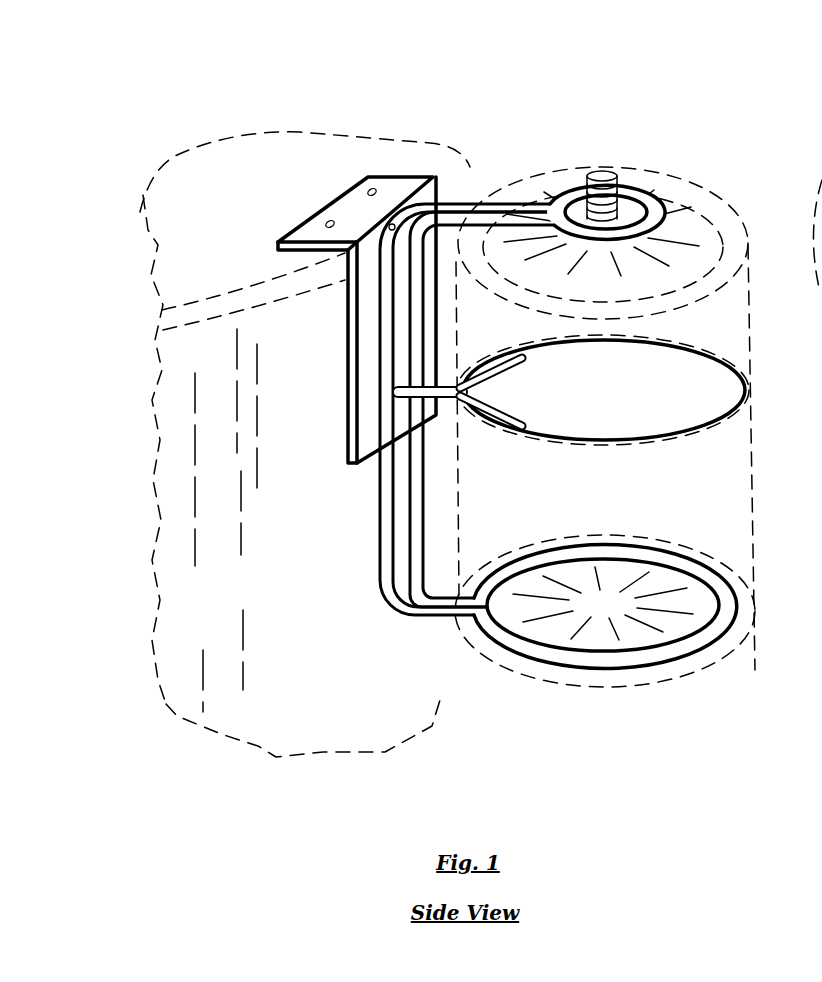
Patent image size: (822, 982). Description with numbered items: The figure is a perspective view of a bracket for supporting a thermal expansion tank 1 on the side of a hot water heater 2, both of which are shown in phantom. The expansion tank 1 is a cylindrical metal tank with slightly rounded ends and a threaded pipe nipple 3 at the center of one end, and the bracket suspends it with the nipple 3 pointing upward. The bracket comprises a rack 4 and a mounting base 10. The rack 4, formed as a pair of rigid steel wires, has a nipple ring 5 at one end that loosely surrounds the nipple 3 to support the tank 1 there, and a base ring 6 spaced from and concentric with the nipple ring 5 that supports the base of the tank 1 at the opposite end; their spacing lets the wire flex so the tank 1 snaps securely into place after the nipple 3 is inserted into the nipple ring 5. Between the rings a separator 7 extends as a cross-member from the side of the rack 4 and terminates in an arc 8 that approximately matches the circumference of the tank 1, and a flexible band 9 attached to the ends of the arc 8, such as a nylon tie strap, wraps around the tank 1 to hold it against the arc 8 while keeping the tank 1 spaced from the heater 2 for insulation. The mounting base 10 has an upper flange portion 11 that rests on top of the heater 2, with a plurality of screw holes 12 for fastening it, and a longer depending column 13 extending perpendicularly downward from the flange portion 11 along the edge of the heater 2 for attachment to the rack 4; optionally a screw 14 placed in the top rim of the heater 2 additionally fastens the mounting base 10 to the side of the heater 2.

The thermal expansion tank 1 is at (688, 205).
The hot water heater 2 is at (277, 185).
The threaded pipe nipple 3 is at (603, 178).
The rack 4 is at (385, 500).
The nipple ring 5 is at (566, 186).
The base ring 6 is at (670, 645).
The separator 7 is at (442, 407).
The arc 8 is at (512, 425).
The flexible band 9 is at (645, 437).
The mounting base 10 is at (352, 403).
The upper flange portion 11 is at (312, 233).
The screw holes 12 is at (372, 192).
The depending column 13 is at (363, 324).
The screw 14 is at (392, 227).